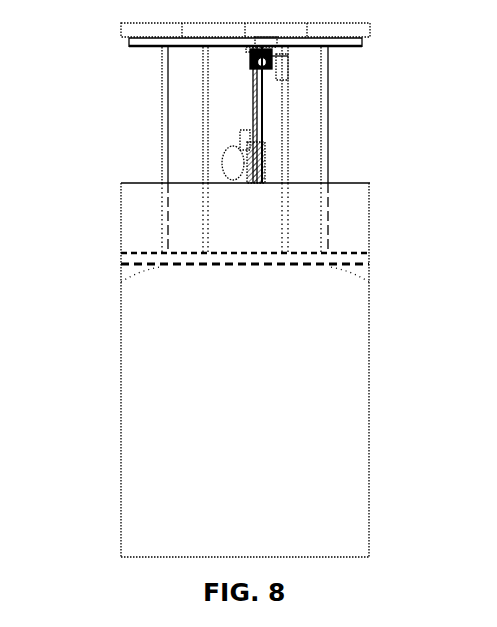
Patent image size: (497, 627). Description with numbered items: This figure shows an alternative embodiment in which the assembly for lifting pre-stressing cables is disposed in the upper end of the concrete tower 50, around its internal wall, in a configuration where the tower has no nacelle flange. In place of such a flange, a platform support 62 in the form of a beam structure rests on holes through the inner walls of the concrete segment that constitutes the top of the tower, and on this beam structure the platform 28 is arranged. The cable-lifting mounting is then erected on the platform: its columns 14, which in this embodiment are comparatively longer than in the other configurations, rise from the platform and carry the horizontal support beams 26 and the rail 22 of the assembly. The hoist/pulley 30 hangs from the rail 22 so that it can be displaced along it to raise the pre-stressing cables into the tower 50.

The columns 14 is at (329, 162).
The rail 22 is at (340, 41).
The horizontal support beams 26 is at (130, 31).
The platform 28 is at (150, 252).
The hoist/pulley 30 is at (283, 68).
The concrete tower 50 is at (260, 412).
The platform support 62 is at (152, 262).